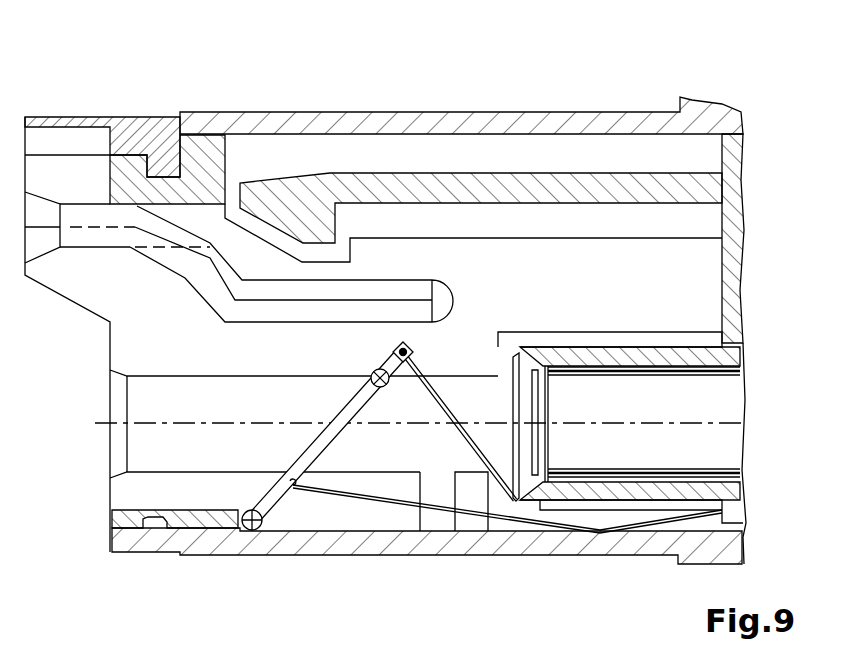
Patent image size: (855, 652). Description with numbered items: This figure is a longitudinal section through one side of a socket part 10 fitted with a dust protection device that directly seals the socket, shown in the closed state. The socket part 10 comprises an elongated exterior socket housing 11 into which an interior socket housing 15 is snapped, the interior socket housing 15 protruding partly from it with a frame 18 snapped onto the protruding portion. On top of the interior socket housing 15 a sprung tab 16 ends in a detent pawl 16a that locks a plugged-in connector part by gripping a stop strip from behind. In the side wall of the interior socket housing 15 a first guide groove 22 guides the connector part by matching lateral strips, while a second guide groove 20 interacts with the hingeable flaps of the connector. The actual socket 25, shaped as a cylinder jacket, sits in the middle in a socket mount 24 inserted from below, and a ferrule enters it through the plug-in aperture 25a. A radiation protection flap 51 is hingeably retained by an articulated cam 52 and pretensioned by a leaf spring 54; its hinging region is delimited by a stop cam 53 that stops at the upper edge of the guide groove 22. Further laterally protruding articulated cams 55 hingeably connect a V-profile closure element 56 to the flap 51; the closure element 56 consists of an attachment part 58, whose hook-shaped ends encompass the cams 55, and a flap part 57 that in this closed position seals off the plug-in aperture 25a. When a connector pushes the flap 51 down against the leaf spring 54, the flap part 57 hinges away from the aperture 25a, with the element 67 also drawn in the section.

The socket part 10 is at (636, 81).
The exterior socket housing 11 is at (400, 126).
The interior socket housing 15 is at (730, 152).
The sprung tab 16 is at (485, 190).
The detent pawl 16a is at (287, 193).
The frame 18 is at (145, 135).
The second guide groove 20 is at (90, 237).
The first guide groove 22 is at (160, 447).
The socket mount 24 is at (668, 346).
The socket 25 is at (710, 375).
The plug-in aperture 25a is at (529, 470).
The radiation protection flap 51 is at (317, 448).
The articulated cam 52 is at (247, 527).
The stop cam 53 is at (378, 372).
The leaf spring 54 is at (510, 512).
The articulated cam 55 is at (405, 350).
The V-profile closure element 56 is at (436, 442).
The flap part 57 is at (513, 398).
The attachment part 58 is at (470, 448).
The spring 67 is at (617, 510).